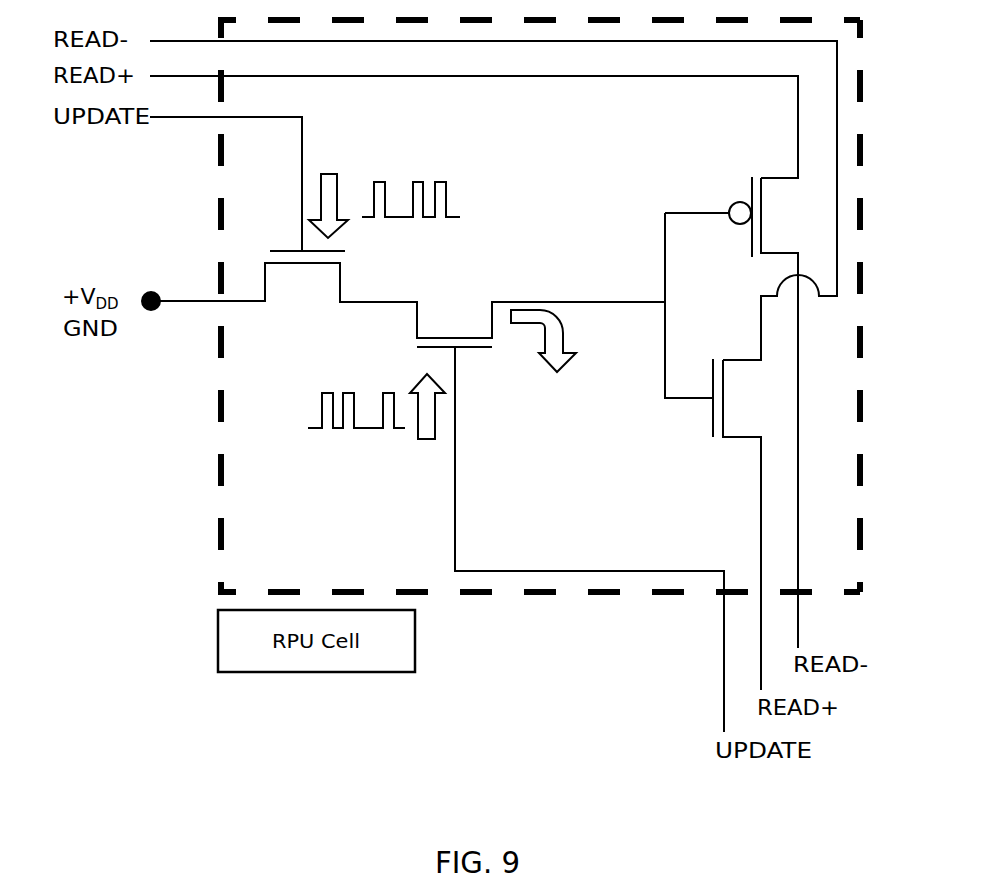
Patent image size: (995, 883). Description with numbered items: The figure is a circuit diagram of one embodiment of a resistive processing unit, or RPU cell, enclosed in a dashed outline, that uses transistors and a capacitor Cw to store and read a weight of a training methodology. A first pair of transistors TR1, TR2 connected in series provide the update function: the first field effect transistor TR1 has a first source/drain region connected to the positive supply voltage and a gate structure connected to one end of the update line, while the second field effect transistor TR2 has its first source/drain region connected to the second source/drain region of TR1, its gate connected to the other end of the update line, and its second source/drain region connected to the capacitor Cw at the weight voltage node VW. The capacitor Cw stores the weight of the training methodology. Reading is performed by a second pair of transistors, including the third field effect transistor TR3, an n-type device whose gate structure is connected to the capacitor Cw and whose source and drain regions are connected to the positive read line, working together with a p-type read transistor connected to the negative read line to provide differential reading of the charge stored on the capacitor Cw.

The first field effect transistor TR1 is at (264, 281).
The second field effect transistor TR2 is at (551, 512).
The third field effect transistor TR3 is at (740, 524).
The weight voltage node VW is at (592, 283).
The capacitor CW is at (611, 447).